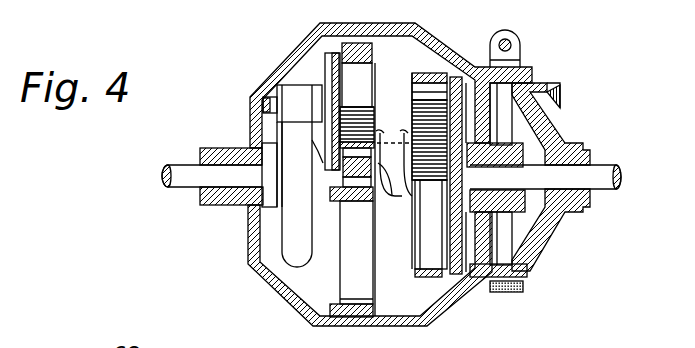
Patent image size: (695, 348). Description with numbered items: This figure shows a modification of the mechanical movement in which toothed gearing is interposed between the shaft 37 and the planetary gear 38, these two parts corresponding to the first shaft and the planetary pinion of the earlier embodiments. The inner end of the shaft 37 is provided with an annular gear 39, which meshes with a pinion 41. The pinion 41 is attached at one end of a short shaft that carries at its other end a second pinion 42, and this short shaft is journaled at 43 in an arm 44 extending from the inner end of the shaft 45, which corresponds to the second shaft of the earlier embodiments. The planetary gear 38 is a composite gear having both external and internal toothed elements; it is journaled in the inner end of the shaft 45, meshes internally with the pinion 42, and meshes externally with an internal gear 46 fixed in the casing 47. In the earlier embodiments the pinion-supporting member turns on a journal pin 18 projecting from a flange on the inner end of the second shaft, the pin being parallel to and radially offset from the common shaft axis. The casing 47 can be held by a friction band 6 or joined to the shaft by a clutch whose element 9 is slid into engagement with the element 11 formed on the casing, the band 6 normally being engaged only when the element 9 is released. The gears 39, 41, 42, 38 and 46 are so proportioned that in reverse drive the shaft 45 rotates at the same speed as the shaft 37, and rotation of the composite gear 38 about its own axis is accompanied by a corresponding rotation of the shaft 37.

The casing 47 is at (287, 56).
The shaft 45 is at (178, 182).
The journal pin 18 is at (310, 140).
The planetary gear 38 is at (356, 50).
The second pinion 42 is at (353, 110).
The journal 43 is at (384, 112).
The arm 44 is at (376, 190).
The pinion 41 is at (432, 78).
The annular gear 39 is at (430, 278).
The internal gear 46 is at (355, 300).
The shaft 37 is at (613, 191).
The friction band 6 is at (518, 54).
The clutch element 9 is at (548, 127).
The clutch element 11 is at (527, 277).